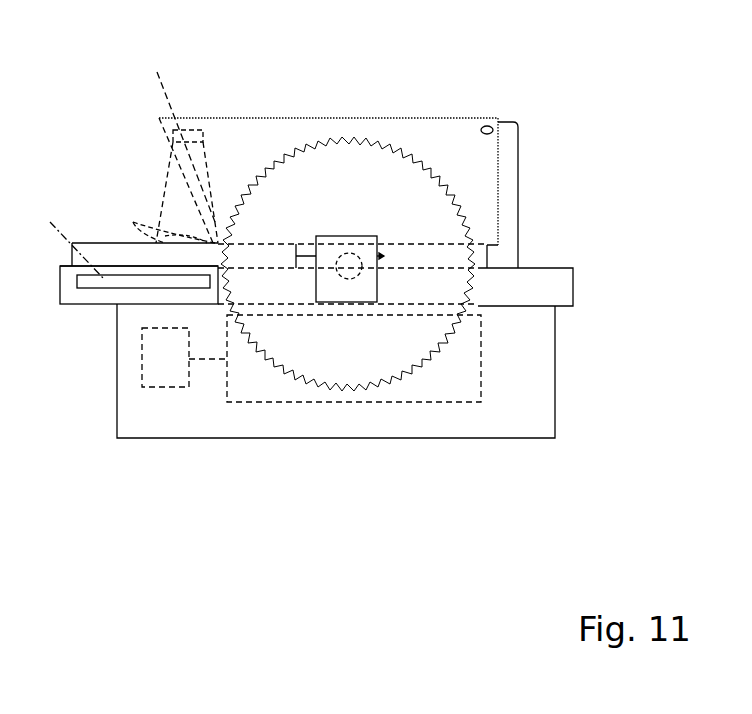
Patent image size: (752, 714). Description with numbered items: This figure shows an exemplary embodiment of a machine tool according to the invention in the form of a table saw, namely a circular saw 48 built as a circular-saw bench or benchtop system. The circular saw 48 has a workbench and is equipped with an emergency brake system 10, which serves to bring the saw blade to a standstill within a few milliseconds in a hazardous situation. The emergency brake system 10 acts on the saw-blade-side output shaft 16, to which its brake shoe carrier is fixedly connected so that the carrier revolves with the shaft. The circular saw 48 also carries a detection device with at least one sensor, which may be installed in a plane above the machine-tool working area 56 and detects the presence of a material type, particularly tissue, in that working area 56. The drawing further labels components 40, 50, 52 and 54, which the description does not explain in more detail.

The emergency brake system 10 is at (368, 288).
The saw-blade-side output shaft 16 is at (347, 273).
The table 40 is at (533, 280).
The circular saw 48 is at (507, 75).
The slot 50 is at (125, 170).
The clamp 52 is at (207, 118).
The guard hood 54 is at (148, 230).
The machine-tool working area 56 is at (188, 252).